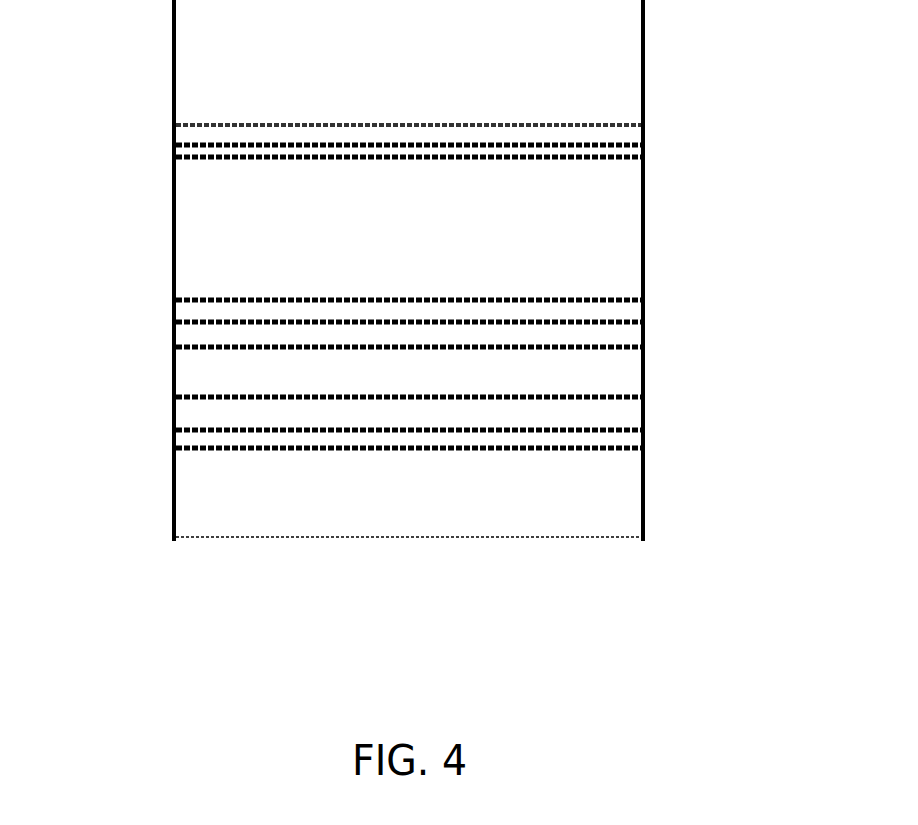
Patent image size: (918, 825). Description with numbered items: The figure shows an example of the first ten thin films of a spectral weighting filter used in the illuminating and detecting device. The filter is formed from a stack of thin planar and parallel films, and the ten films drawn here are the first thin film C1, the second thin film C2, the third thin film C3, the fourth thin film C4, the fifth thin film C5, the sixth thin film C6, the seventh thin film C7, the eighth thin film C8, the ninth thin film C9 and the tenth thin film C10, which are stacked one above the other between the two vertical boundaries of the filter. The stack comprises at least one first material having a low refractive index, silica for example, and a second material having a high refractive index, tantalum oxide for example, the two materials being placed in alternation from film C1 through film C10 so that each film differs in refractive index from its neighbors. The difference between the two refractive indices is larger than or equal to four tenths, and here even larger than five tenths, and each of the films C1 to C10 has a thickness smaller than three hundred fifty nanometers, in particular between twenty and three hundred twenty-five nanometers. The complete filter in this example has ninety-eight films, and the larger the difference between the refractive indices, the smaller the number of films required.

The first thin film C1 is at (408, 492).
The second thin film C2 is at (627, 433).
The third thin film C3 is at (623, 407).
The fourth thin film C4 is at (203, 368).
The fifth thin film C5 is at (620, 332).
The sixth thin film C6 is at (193, 312).
The seventh thin film C7 is at (408, 228).
The eighth thin film C8 is at (630, 155).
The ninth thin film C9 is at (188, 137).
The tenth thin film C10 is at (408, 62).